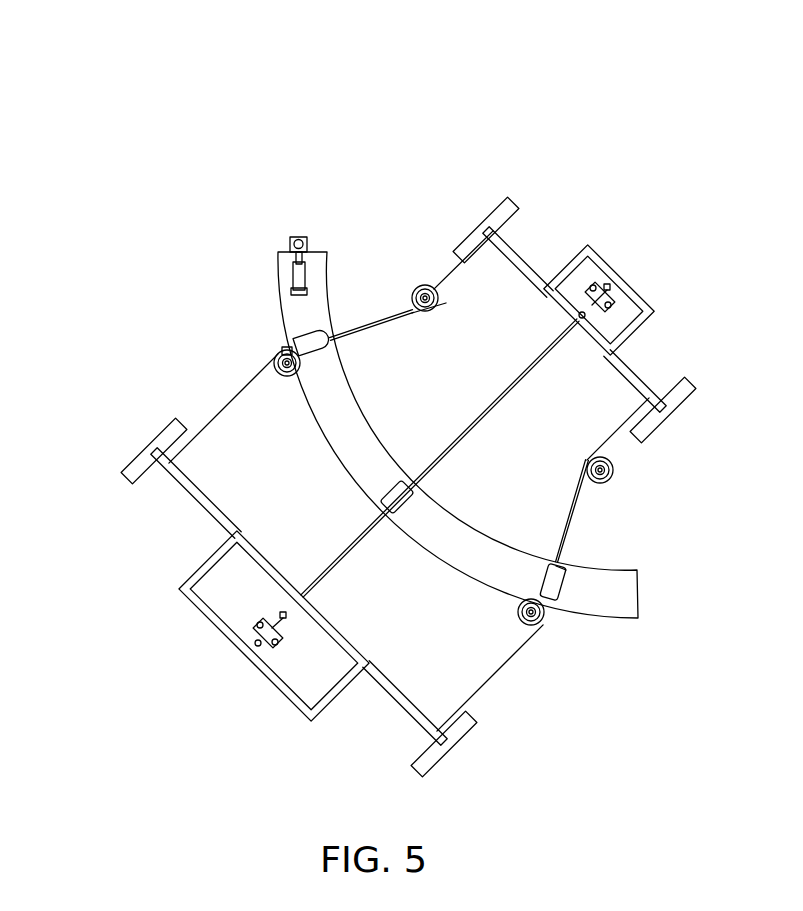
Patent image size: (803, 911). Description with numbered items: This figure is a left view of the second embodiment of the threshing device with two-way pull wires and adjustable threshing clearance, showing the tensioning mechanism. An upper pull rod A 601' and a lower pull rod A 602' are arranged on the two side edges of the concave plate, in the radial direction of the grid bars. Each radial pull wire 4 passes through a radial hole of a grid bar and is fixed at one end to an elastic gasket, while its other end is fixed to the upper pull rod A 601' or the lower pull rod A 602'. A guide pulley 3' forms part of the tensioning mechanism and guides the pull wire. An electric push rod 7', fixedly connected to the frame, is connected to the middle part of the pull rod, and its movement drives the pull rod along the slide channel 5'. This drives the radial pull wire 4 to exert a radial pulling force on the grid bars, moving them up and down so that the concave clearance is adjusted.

The upper pull rod A 601' is at (302, 148).
The lower pull rod A 602' is at (146, 460).
The guide pulley 3' is at (249, 191).
The electric push rod 7' is at (179, 225).
The radial pull wire 4 is at (350, 328).
The slide channel 5' is at (119, 396).